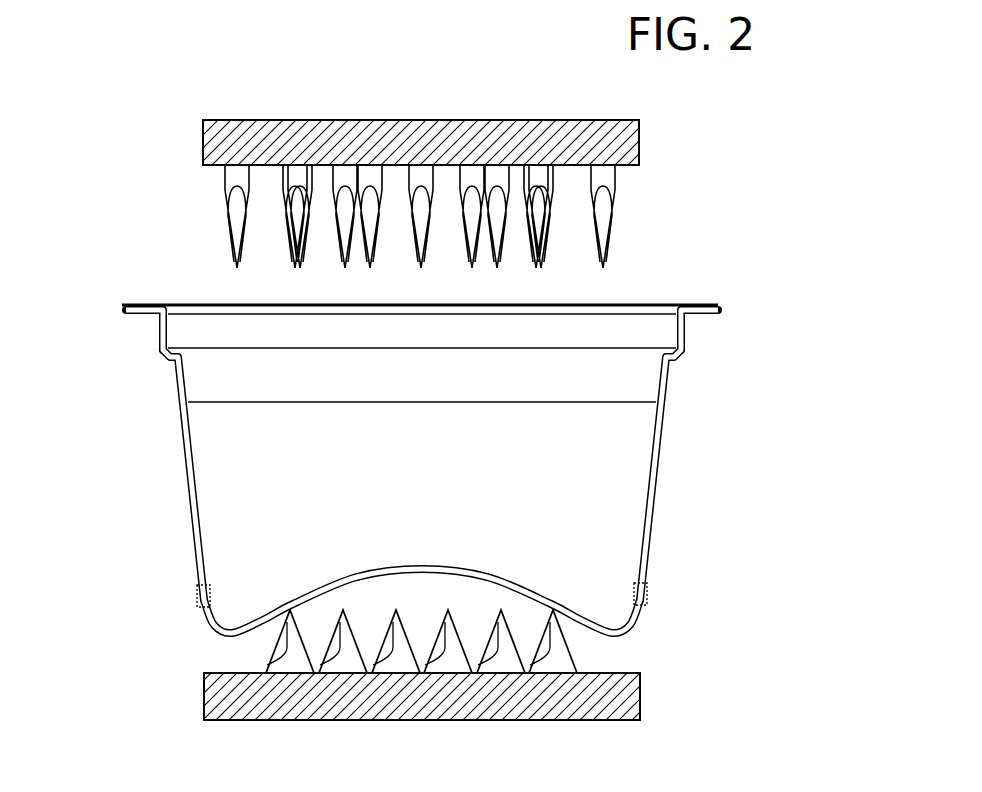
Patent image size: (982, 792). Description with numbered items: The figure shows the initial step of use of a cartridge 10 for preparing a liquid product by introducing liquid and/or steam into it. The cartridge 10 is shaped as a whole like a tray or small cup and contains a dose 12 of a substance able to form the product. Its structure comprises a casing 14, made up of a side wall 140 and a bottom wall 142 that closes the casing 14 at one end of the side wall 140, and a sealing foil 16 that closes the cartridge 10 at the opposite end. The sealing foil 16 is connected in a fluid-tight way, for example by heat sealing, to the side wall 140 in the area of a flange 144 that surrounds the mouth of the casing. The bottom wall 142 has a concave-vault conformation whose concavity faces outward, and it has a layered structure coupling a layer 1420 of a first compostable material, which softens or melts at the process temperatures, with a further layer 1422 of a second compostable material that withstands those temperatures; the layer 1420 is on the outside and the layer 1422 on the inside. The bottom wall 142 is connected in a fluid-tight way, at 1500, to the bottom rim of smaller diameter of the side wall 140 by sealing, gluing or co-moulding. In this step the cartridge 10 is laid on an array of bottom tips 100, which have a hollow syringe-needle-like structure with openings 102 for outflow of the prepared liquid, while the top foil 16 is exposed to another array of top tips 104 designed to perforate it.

The cartridge 10 is at (728, 187).
The top tips 104 is at (567, 254).
The sealing foil 16 is at (216, 304).
The casing 14 is at (438, 503).
The flange 144 is at (698, 313).
The side wall 140 is at (655, 458).
The bottom wall 142 is at (382, 590).
The heat-resistant layer 1422 is at (293, 598).
The non-heat-resistant layer 1420 is at (418, 577).
The fluid-tight connection 1500 is at (197, 597).
The dose 12 is at (240, 472).
The bottom tips 100 is at (600, 653).
The openings 102 is at (290, 650).